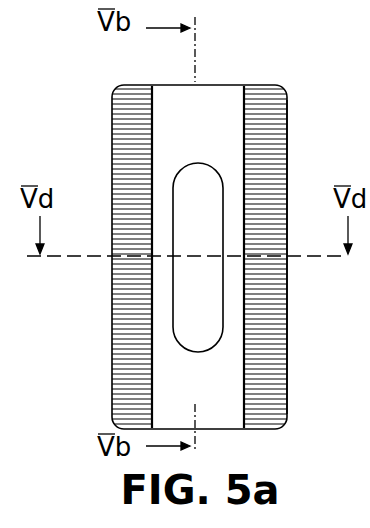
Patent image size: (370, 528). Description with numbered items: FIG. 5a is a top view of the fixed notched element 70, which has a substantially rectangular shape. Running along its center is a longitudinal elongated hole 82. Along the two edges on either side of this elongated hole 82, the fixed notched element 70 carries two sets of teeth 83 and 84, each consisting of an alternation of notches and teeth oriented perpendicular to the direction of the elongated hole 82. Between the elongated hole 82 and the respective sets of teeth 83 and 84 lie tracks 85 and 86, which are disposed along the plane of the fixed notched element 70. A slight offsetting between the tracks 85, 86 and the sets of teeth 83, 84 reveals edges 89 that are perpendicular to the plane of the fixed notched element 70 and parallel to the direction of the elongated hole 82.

The fixed notched element 70 is at (96, 125).
The elongated hole 82 is at (212, 217).
The set of teeth 83 is at (273, 347).
The set of teeth 84 is at (130, 364).
The track 85 is at (232, 284).
The track 86 is at (163, 306).
The edge 89 is at (250, 144).